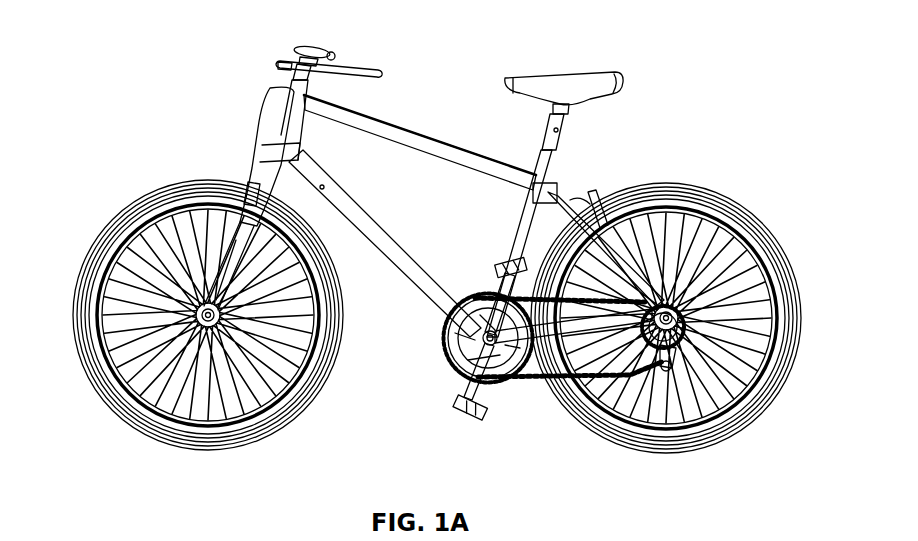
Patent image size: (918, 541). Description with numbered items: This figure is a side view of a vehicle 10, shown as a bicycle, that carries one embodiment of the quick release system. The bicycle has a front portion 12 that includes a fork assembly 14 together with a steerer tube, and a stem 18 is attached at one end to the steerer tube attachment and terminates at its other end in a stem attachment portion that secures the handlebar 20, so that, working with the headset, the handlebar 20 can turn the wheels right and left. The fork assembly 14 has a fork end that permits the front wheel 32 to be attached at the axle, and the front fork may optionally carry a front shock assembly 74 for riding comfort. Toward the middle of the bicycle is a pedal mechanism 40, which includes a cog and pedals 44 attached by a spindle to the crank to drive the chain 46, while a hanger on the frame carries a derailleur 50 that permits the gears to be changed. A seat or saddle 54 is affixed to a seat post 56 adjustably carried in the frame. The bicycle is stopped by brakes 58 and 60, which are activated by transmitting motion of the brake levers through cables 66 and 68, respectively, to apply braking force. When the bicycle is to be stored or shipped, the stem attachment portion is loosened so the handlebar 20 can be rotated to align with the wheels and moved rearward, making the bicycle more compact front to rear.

The vehicle 10 is at (702, 110).
The front portion 12 is at (153, 131).
The fork assembly 14 is at (223, 266).
The stem 18 is at (297, 83).
The handlebar 20 is at (349, 53).
The wheel 32 is at (137, 432).
The pedal mechanism 40 is at (445, 369).
The pedals 44 is at (488, 412).
The chain 46 is at (485, 295).
The derailleur 50 is at (748, 210).
The seat or saddle 54 is at (567, 75).
The seat post 56 is at (567, 122).
The brake 58 is at (254, 184).
The brake 60 is at (592, 192).
The cable 66 is at (262, 118).
The cable 68 is at (402, 124).
The front shock assembly 74 is at (240, 230).